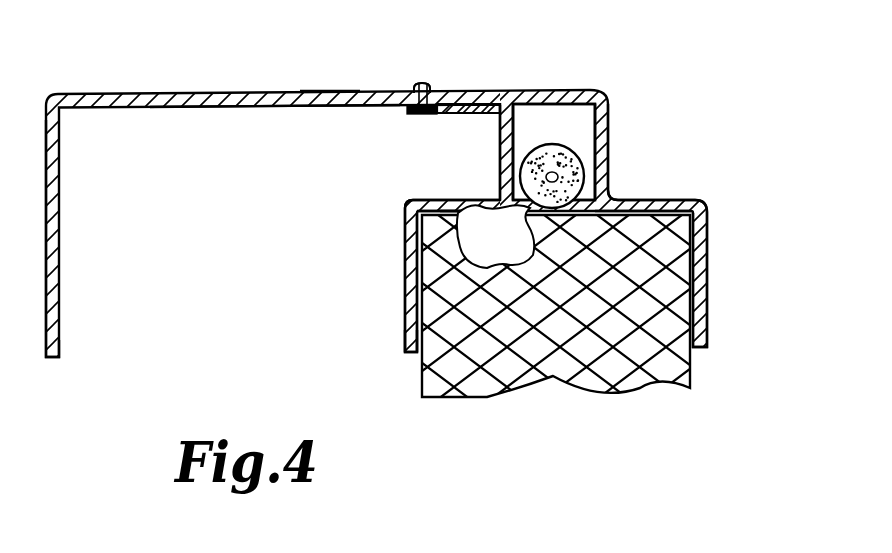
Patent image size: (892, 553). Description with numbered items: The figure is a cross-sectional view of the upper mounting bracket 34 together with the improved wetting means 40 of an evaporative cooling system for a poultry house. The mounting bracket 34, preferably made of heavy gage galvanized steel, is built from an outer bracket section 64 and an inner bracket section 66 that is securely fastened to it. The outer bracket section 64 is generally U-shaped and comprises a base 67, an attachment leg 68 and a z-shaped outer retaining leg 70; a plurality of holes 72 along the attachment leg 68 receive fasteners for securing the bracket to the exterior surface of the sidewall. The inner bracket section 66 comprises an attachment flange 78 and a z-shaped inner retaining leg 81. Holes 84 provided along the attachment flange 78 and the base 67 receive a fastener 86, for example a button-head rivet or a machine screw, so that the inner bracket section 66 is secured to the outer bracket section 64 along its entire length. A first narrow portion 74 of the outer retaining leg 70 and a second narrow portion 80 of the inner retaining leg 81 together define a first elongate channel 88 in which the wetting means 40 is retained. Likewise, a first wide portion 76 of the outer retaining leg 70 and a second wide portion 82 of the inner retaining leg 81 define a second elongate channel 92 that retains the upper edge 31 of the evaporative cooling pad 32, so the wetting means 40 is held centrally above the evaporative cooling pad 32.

The mounting bracket 34 is at (326, 58).
The outer bracket section 64 is at (143, 93).
The base 67 is at (181, 108).
The holes 72 is at (60, 247).
The attachment leg 68 is at (60, 327).
The attachment flange 78 is at (395, 106).
The holes 84 is at (413, 86).
The fastener 86 is at (428, 88).
The second narrow portion 80 is at (500, 147).
The inner bracket section 66 is at (430, 200).
The upper edge 31 is at (473, 200).
The first elongate channel 88 is at (563, 131).
The first narrow portion 74 is at (608, 155).
The wetting means 40 is at (558, 173).
The outer retaining leg 70 is at (665, 198).
The second elongate channel 92 is at (503, 247).
The second wide portion 82 is at (405, 270).
The inner retaining leg 81 is at (405, 325).
The first wide portion 76 is at (704, 278).
The evaporative cooling pad 32 is at (665, 357).